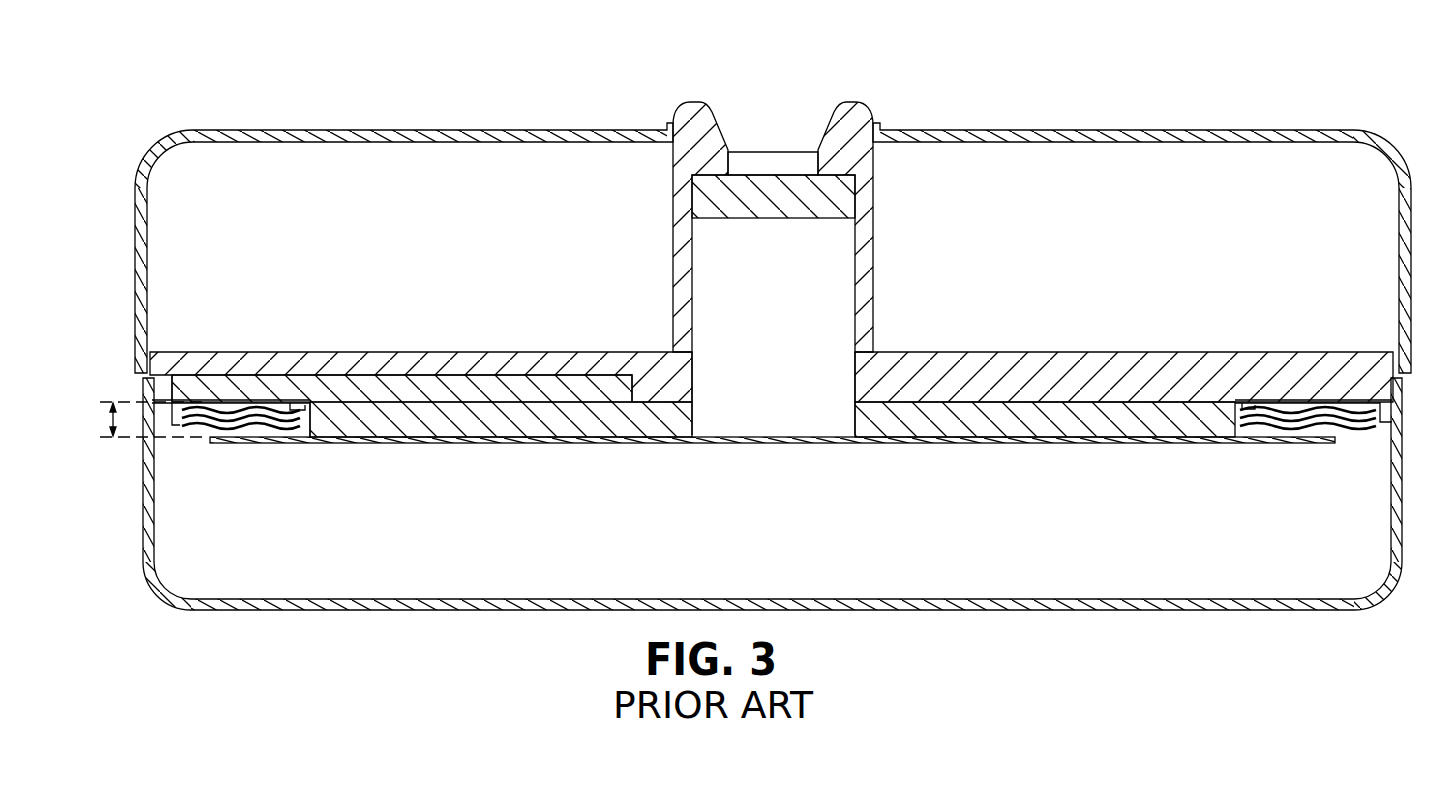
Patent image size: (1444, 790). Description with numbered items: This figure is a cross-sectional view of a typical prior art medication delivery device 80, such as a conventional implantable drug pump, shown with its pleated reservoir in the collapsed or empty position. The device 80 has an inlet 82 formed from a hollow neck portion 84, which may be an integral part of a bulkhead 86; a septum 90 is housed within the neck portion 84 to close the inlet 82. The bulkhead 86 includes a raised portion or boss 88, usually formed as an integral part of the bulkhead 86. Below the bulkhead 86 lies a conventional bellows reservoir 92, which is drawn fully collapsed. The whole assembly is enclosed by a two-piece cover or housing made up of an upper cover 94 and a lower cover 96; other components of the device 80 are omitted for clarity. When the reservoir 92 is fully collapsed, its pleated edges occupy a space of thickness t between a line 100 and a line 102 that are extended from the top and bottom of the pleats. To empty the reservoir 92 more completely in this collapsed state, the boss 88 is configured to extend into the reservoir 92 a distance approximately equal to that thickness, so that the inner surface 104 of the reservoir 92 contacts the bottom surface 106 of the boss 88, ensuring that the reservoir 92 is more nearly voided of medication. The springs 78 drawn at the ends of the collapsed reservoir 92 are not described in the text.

The spring 78 is at (198, 428).
The prior art medication delivery device 80 is at (425, 118).
The inlet 82 is at (794, 165).
The hollow neck portion 84 is at (673, 228).
The bulkhead 86 is at (1016, 368).
The boss 88 is at (468, 418).
The septum 90 is at (752, 196).
The bellows reservoir 92 is at (1103, 444).
The upper cover 94 is at (1358, 131).
The lower cover 96 is at (1386, 600).
The line 100 is at (123, 400).
The line 102 is at (121, 438).
The inner surface of reservoir 104 is at (491, 442).
The bottom surface of boss 106 is at (333, 442).